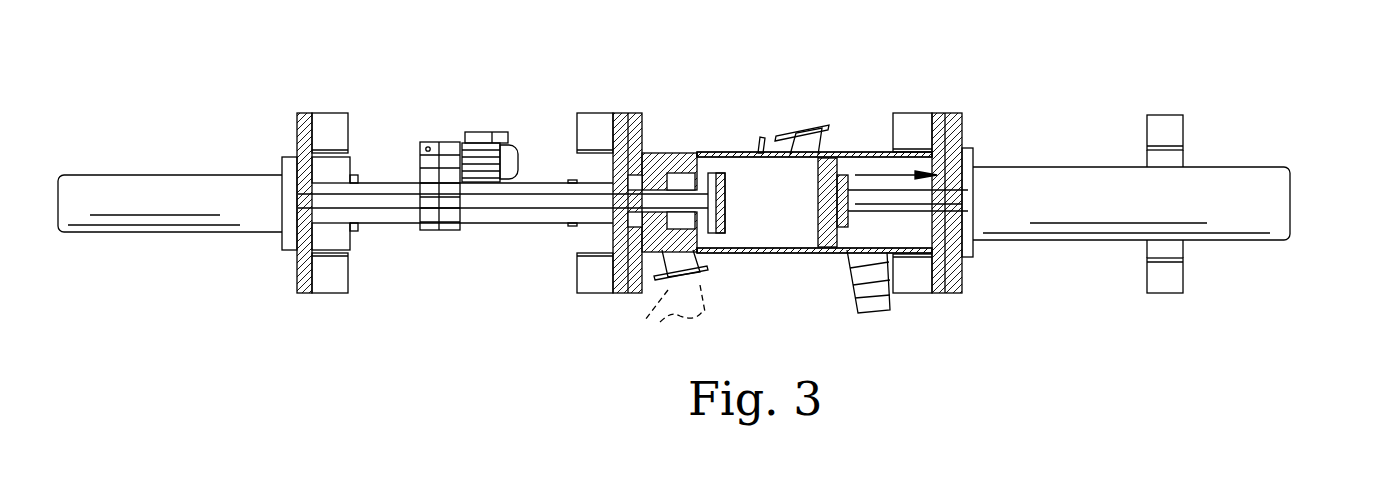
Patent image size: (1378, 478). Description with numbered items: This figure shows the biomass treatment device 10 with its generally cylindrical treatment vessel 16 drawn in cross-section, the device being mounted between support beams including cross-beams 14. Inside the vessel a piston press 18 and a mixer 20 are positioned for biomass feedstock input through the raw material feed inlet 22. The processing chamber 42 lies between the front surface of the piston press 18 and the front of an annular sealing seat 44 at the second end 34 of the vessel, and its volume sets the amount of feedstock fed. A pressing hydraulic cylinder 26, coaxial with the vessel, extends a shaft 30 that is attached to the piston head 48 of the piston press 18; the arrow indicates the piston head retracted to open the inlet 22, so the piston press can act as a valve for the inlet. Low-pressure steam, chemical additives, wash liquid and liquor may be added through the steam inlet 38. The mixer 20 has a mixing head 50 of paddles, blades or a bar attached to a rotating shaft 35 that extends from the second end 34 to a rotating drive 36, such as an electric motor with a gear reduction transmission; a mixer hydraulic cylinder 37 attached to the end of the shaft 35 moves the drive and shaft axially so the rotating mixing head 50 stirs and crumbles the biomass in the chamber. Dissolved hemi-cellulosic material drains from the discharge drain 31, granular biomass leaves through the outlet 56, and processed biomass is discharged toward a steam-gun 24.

The biomass treatment device 10 is at (898, 68).
The cross-beams 14 is at (1167, 115).
The treatment vessel 16 is at (862, 152).
The piston press 18 is at (948, 238).
The mixer 20 is at (740, 164).
The raw material feed inlet 22 is at (808, 125).
The steam-gun 24 is at (660, 300).
The pressing hydraulic cylinder 26 is at (1280, 177).
The shaft 30 is at (963, 200).
The discharge drain 31 is at (865, 312).
The second end 34 is at (577, 245).
The shaft 35 is at (500, 206).
The rotating drive 36 is at (447, 142).
The mixer hydraulic cylinder 37 is at (150, 183).
The steam inlet 38 is at (757, 135).
The processing chamber 42 is at (760, 256).
The annular sealing seat 44 is at (655, 165).
The piston head 48 is at (830, 212).
The mixing head 50 is at (725, 205).
The outlet 56 is at (692, 285).